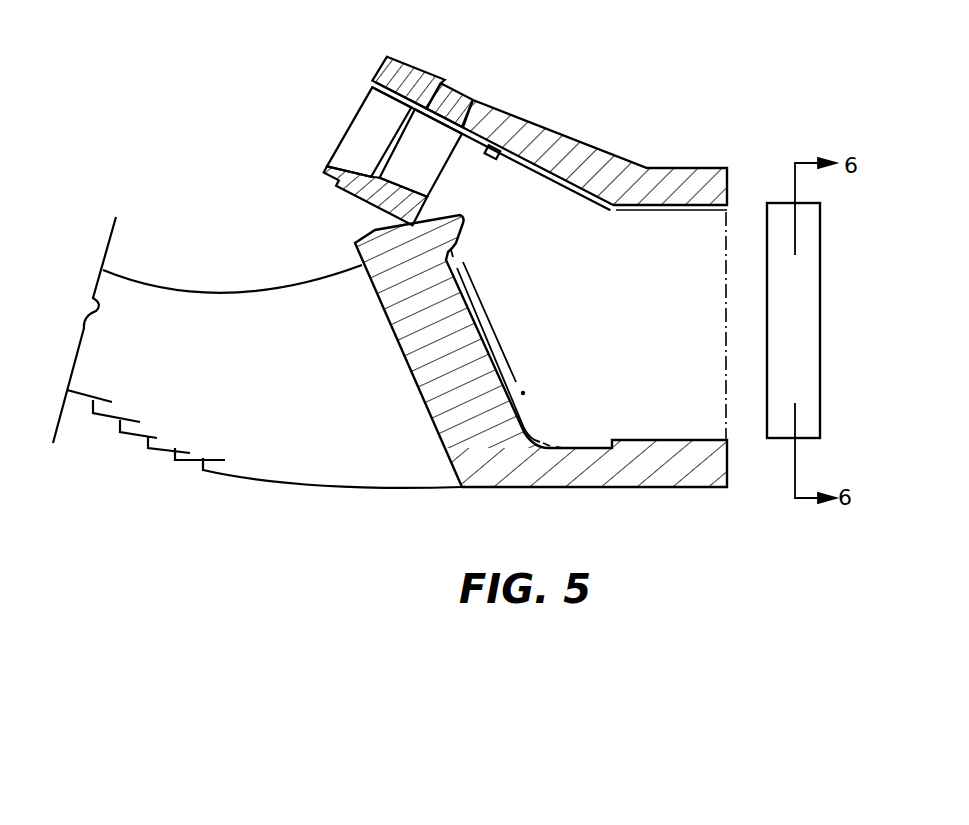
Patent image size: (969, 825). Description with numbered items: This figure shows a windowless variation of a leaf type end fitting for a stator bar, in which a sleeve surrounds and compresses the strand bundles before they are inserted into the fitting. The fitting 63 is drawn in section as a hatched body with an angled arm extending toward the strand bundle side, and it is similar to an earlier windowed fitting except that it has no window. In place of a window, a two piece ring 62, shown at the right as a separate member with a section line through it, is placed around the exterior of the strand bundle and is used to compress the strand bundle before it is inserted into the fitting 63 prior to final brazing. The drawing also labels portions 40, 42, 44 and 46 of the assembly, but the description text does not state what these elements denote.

The body 40 is at (715, 438).
The sheet 42 is at (236, 309).
The clamp 44 is at (384, 85).
The groove 46 is at (544, 283).
The two piece ring 62 is at (807, 345).
The fitting 63 is at (598, 136).